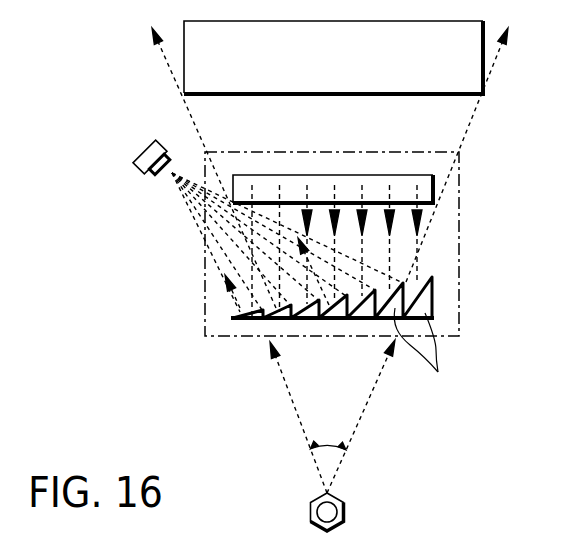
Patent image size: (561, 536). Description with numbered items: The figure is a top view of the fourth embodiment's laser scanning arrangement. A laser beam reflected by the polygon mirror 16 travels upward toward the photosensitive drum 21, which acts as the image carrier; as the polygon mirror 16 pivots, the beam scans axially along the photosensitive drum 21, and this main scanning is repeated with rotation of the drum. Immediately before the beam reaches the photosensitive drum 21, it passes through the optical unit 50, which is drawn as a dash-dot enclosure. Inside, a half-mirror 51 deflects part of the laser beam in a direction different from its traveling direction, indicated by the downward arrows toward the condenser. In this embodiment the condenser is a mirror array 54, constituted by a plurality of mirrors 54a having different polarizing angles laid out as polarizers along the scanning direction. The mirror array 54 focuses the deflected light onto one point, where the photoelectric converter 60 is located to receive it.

The polygon mirror 16 is at (345, 512).
The photosensitive drum 21 is at (401, 97).
The optical unit 50 is at (461, 240).
The half-mirror 51 is at (433, 190).
The mirror array 54 is at (368, 341).
The mirrors 54a is at (479, 300).
The photoelectric converter 60 is at (146, 151).